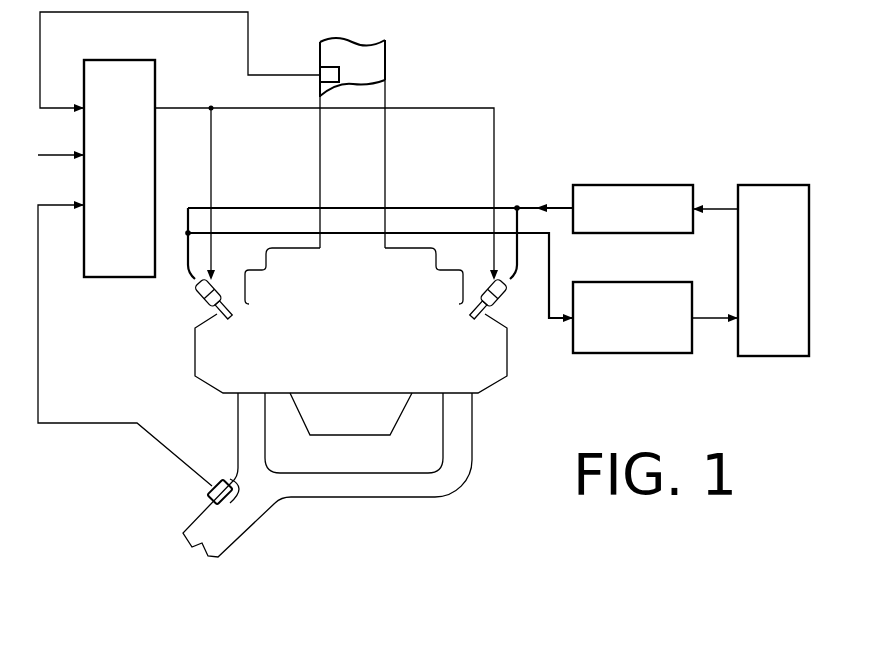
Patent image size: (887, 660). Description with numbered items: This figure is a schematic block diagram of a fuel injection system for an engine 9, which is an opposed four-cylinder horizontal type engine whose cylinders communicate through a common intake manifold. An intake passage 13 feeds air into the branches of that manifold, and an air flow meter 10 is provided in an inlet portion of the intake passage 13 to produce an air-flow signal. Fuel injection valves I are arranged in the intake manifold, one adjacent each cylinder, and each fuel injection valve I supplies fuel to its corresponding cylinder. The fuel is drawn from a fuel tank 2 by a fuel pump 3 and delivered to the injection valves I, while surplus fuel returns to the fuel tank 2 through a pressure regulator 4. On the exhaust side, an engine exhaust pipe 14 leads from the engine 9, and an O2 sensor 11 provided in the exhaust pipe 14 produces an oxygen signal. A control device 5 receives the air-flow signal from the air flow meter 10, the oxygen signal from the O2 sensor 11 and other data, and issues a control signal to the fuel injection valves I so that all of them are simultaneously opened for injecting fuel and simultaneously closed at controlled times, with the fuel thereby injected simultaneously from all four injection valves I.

The fuel tank 2 is at (803, 164).
The fuel pump 3 is at (664, 164).
The pressure regulator 4 is at (664, 262).
The control device 5 is at (117, 278).
The engine 9 is at (458, 372).
The air flow meter 10 is at (321, 75).
The O2 sensor 11 is at (212, 493).
The intake passage 13 is at (386, 153).
The engine exhaust pipe 14 is at (258, 513).
The fuel injection valve I is at (198, 298).